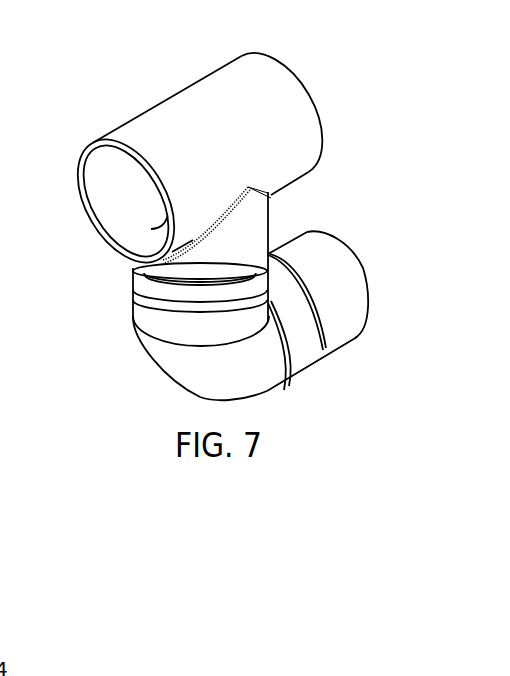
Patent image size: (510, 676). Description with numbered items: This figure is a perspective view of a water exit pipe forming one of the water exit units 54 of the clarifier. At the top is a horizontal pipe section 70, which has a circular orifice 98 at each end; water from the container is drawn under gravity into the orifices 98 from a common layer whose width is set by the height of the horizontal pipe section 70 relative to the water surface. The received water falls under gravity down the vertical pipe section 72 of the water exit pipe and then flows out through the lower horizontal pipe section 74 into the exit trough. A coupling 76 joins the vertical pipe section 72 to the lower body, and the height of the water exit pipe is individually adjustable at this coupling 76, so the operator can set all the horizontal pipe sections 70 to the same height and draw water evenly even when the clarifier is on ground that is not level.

The water exit unit 54 is at (187, 43).
The horizontal pipe section 70 is at (269, 103).
The vertical pipe section 72 is at (257, 230).
The horizontal pipe section 74 is at (306, 291).
The coupling 76 is at (172, 292).
The orifice 98 is at (103, 212).